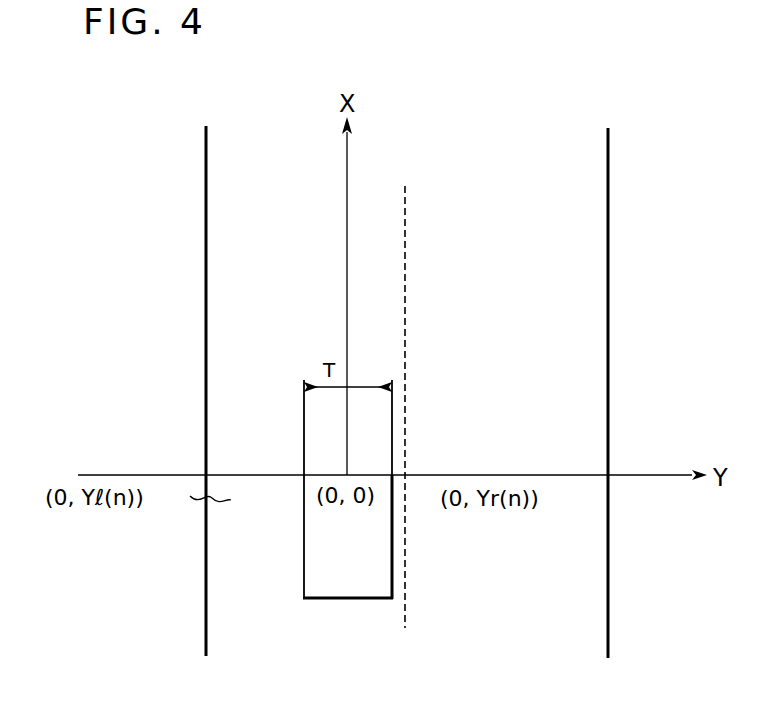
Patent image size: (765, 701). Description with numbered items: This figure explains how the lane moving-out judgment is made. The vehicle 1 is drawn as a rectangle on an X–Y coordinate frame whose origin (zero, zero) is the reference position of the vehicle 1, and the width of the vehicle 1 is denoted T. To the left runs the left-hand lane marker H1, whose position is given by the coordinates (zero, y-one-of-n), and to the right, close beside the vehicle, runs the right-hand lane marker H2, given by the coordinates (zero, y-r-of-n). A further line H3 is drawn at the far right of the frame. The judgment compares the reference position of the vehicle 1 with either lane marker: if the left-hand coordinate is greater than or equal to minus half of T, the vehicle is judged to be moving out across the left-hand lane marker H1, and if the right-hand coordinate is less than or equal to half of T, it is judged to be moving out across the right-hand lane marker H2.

The vehicle 1 is at (350, 599).
The left-hand lane marker H1 is at (205, 165).
The right-hand lane marker H2 is at (406, 222).
The right boundary line H3 is at (607, 168).